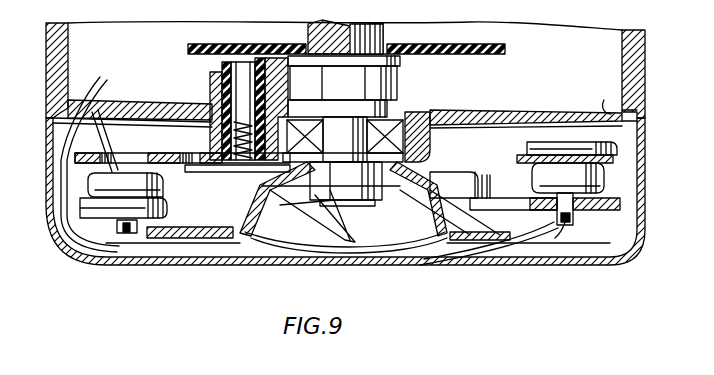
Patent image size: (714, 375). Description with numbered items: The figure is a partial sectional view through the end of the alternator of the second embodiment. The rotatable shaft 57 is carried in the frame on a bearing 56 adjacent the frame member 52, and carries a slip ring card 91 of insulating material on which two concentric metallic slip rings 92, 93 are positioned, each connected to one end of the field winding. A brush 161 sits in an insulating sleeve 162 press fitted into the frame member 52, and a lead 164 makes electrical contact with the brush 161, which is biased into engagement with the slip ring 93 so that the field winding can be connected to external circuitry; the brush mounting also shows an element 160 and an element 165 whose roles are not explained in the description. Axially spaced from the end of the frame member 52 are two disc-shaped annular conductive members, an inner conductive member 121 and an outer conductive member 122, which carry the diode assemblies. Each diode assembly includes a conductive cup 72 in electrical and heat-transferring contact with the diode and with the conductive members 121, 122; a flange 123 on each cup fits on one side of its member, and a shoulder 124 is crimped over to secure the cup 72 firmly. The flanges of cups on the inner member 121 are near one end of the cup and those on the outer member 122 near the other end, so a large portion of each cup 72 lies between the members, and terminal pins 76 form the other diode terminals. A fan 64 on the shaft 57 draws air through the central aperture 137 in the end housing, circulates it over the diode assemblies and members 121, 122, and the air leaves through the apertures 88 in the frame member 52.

The frame member 52 is at (641, 93).
The bearing 56 is at (390, 127).
The rotatable shaft 57 is at (348, 145).
The fan 64 is at (482, 236).
The cup 72 is at (96, 182).
The terminal pin 76 is at (560, 218).
The apertures 88 is at (78, 104).
The slip ring card 91 is at (194, 45).
The slip ring 92 is at (492, 46).
The slip ring 93 is at (466, 40).
The inner conductive member 121 is at (618, 153).
The outer conductive member 122 is at (612, 205).
The flange 123 is at (120, 226).
The shoulder 124 is at (80, 204).
The central aperture 137 is at (432, 248).
The base plate 160 is at (240, 167).
The brush 161 is at (232, 64).
The insulating sleeve 162 is at (260, 84).
The lead 164 is at (236, 146).
The bolt 165 is at (222, 130).